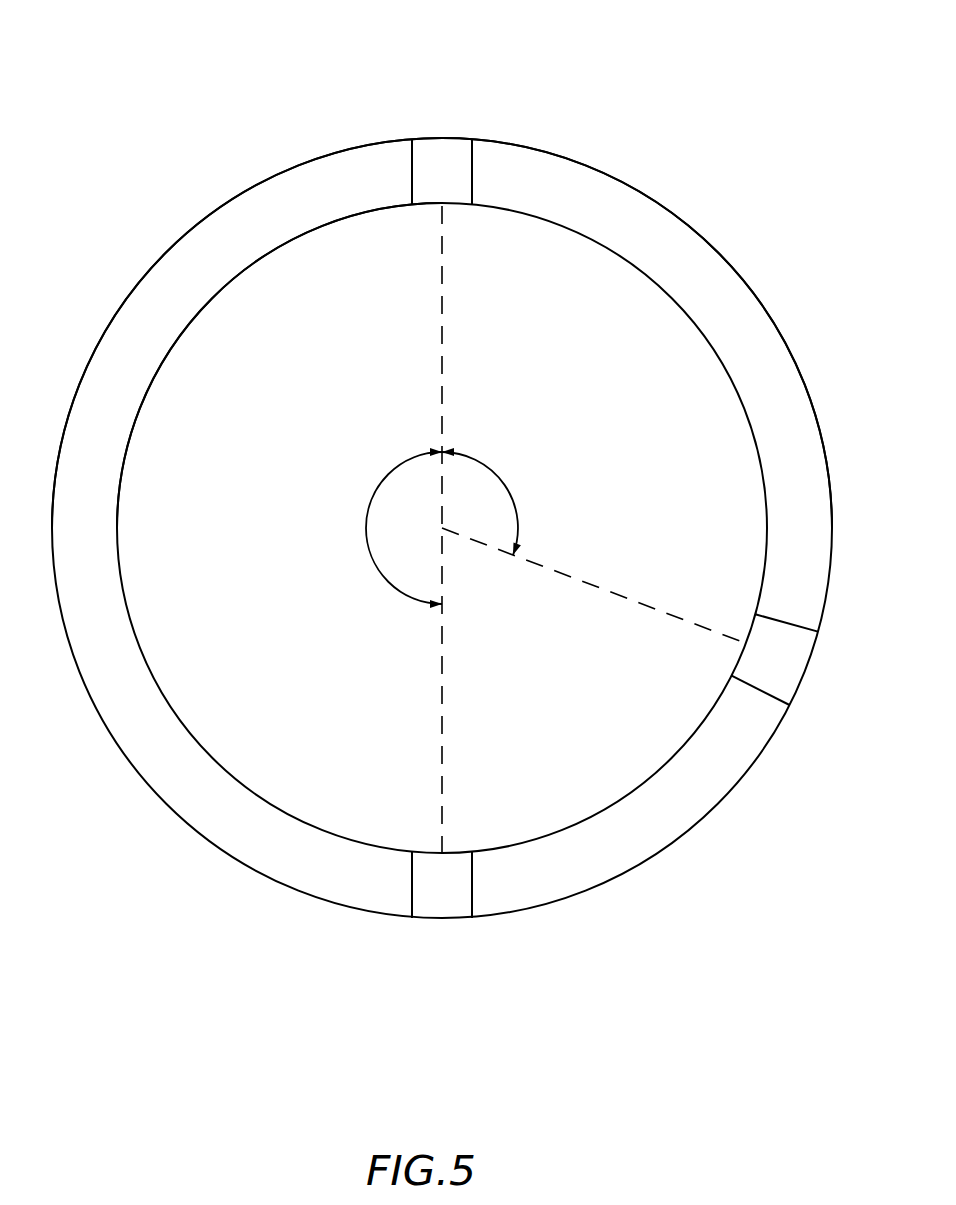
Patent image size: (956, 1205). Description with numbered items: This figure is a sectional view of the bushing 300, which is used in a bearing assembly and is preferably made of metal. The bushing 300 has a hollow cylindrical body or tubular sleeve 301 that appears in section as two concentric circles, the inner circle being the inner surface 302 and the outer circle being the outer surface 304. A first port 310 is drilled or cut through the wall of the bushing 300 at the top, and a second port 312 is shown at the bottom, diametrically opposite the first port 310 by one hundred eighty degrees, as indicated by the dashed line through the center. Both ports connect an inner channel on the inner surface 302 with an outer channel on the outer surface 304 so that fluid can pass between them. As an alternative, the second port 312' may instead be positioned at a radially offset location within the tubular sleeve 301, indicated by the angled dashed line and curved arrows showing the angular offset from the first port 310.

The bushing 300 is at (216, 74).
The tubular sleeve 301 is at (615, 169).
The inner surface 302 is at (293, 250).
The outer surface 304 is at (122, 295).
The first port 310 is at (470, 172).
The second port 312 is at (416, 948).
The second port 312' is at (775, 762).